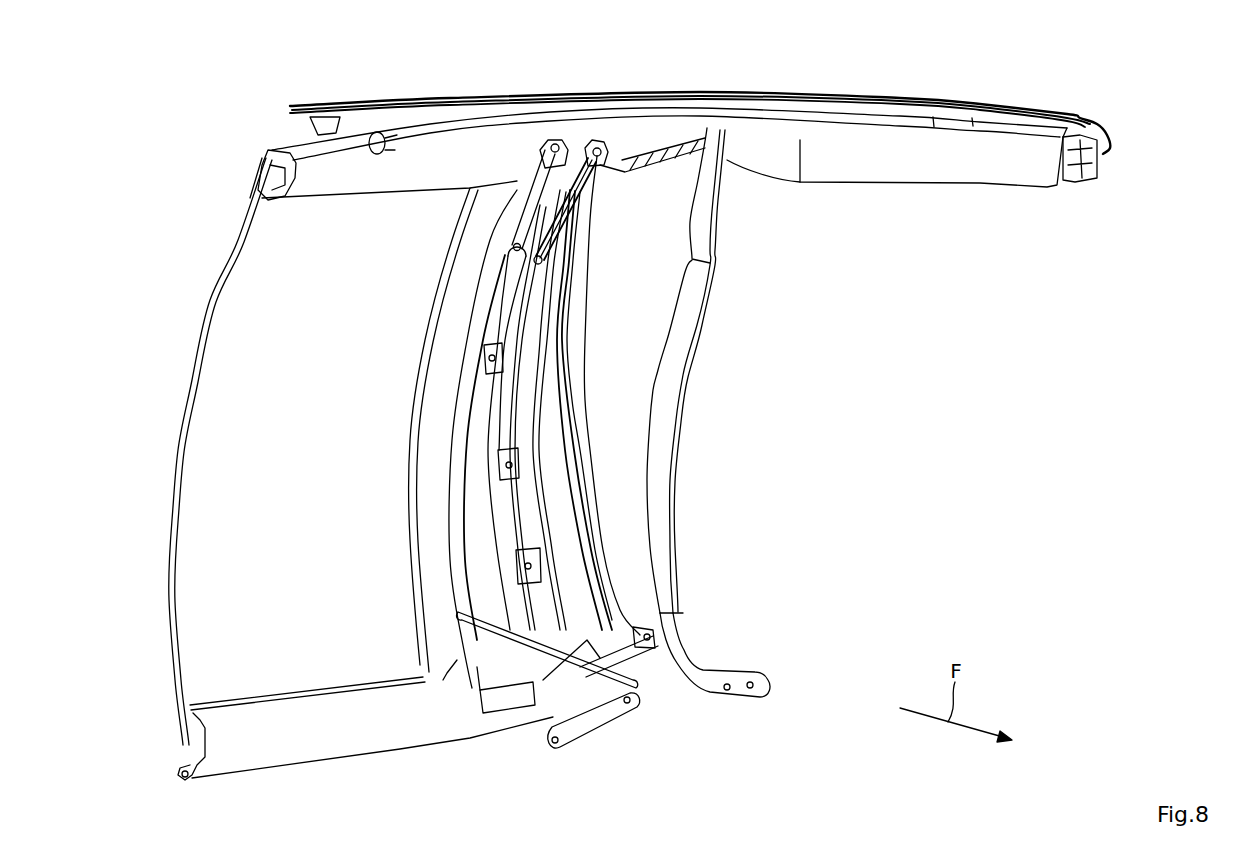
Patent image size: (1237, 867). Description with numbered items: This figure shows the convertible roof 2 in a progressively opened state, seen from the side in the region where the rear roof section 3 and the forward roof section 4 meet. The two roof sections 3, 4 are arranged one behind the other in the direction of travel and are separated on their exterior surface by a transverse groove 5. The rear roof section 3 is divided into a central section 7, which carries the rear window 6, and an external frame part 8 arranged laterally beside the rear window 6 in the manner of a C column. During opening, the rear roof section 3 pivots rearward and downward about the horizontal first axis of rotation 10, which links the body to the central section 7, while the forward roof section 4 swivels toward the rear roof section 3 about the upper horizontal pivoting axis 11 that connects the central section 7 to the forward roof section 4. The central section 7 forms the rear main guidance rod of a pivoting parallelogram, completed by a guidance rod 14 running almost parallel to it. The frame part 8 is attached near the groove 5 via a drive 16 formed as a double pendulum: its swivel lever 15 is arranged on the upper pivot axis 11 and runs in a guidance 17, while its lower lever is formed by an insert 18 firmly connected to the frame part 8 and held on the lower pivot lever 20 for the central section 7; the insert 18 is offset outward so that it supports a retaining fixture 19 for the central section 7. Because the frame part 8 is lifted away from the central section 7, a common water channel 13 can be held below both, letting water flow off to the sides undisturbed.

The roof 2 is at (418, 72).
The rear roof section 3 is at (331, 469).
The forward roof section 4 is at (697, 78).
The groove 5 is at (270, 140).
The rear window 6 is at (283, 380).
The central section 7 is at (186, 428).
The external frame part 8 is at (550, 453).
The first axis of rotation 10 is at (633, 713).
The second upper horizontal pivoting axis 11 is at (556, 146).
The water channel 13 is at (178, 745).
The guidance rod 14 is at (672, 358).
The swivel lever 15 is at (570, 207).
The drive 16 is at (588, 276).
The guidance 17 is at (597, 150).
The insert 18 is at (513, 405).
The retaining fixture 19 is at (498, 718).
The lower pivot lever 20 is at (585, 725).